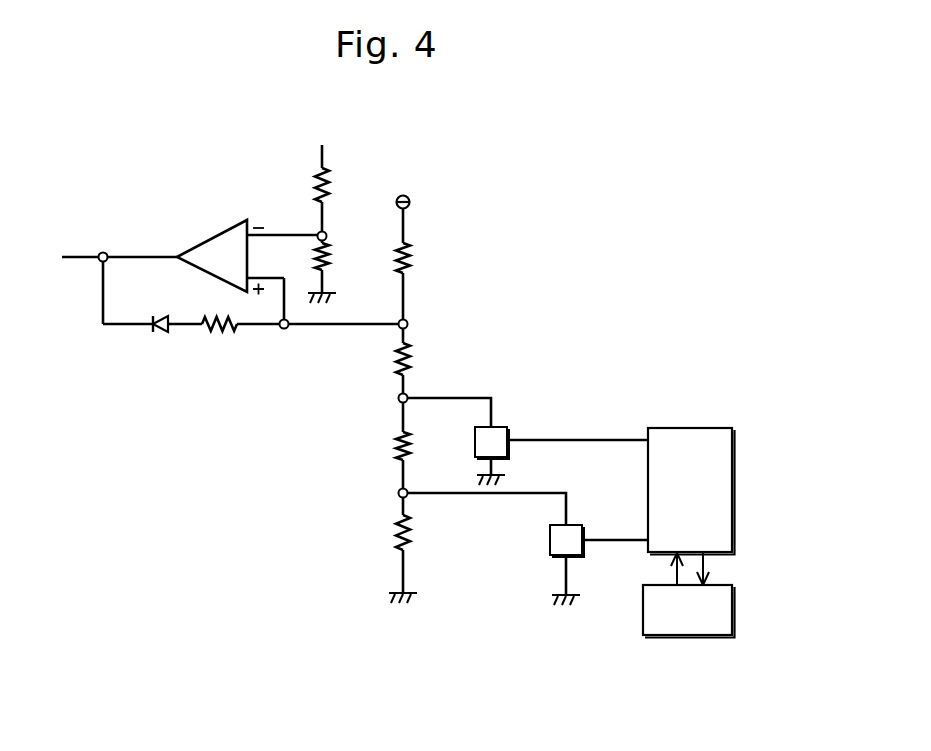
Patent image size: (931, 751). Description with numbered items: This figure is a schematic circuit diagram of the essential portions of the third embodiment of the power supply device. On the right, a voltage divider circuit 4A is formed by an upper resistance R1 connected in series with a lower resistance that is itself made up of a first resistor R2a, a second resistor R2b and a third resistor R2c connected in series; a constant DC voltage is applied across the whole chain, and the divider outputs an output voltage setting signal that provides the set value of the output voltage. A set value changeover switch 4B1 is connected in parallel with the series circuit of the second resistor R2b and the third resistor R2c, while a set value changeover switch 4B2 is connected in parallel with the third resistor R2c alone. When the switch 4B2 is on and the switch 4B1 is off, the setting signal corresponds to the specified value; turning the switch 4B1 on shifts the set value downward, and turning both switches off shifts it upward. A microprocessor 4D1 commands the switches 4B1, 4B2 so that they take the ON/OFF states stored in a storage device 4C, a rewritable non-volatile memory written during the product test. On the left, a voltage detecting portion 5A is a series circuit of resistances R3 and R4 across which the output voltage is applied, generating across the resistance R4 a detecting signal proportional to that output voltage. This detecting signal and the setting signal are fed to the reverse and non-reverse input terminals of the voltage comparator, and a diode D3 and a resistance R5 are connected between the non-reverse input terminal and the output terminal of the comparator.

The voltage detecting portion 5A is at (387, 144).
The voltage divider circuit 4A is at (437, 204).
The upper resistance R1 is at (407, 259).
The first resistor R2a is at (407, 364).
The second resistor R2b is at (398, 449).
The third resistor R2c is at (398, 536).
The resistance R3 is at (326, 181).
The resistance R4 is at (326, 259).
The resistance R5 is at (222, 331).
The diode D3 is at (160, 333).
The set value changeover switch 4B1 is at (505, 427).
The set value changeover switch 4B2 is at (572, 525).
The microprocessor 4D1 is at (712, 428).
The storage device 4C is at (735, 596).